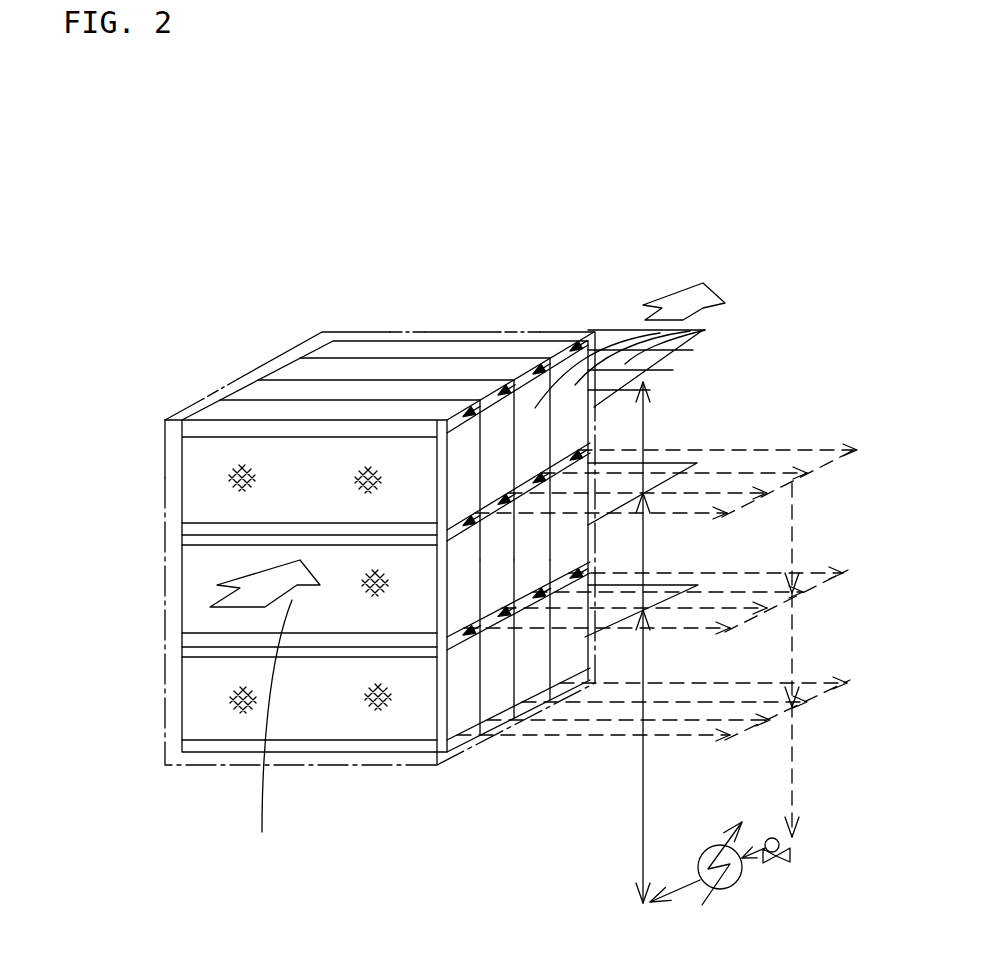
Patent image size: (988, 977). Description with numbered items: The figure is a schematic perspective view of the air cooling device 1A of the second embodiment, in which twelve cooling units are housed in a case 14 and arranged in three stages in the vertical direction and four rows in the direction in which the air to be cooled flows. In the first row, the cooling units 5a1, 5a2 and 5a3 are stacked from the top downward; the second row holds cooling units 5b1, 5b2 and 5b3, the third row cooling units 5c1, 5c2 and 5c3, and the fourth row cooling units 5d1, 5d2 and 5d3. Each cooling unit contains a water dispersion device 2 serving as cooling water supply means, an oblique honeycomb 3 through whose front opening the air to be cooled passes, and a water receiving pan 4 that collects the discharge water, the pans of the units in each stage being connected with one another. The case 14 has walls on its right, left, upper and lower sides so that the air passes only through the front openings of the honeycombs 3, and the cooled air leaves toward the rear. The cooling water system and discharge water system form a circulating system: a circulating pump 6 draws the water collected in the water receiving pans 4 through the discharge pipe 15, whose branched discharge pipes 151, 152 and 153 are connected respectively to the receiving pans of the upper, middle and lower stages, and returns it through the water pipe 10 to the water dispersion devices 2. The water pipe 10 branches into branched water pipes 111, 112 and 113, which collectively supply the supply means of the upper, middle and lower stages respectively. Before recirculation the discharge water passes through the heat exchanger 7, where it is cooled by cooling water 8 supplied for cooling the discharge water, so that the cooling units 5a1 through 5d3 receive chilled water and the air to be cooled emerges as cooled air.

The air cooling device 1A is at (628, 237).
The case 14 is at (197, 767).
The water dispersion device (cooling water supply means) 2 is at (189, 431).
The oblique honeycomb 3 is at (193, 473).
The water receiving pan (water receiving section) 4 is at (198, 526).
The cooling unit 5a1 is at (92, 418).
The cooling unit 5a2 is at (92, 548).
The cooling unit 5a3 is at (92, 660).
The cooling unit 5b1 is at (287, 390).
The cooling unit 5c1 is at (378, 367).
The cooling unit 5d1 is at (470, 343).
The cooling unit 5b2 is at (485, 550).
The cooling unit 5c2 is at (523, 555).
The cooling unit 5d2 is at (570, 548).
The cooling unit 5b3 is at (488, 700).
The cooling unit 5c3 is at (525, 675).
The cooling unit 5d3 is at (563, 663).
The water pipe 10 is at (643, 420).
The branched water pipe 111 is at (651, 361).
The branched water pipe 112 is at (677, 450).
The branched water pipe 113 is at (677, 577).
The branched discharge pipe 151 is at (755, 450).
The branched discharge pipe 152 is at (800, 573).
The branched discharge pipe 153 is at (793, 682).
The discharge pipe 15 is at (792, 764).
The circulating pump (water circulating means) 6 is at (792, 866).
The heat exchanger (cooling means) 7 is at (738, 888).
The cooling water for cooling discharge water 8 is at (731, 832).